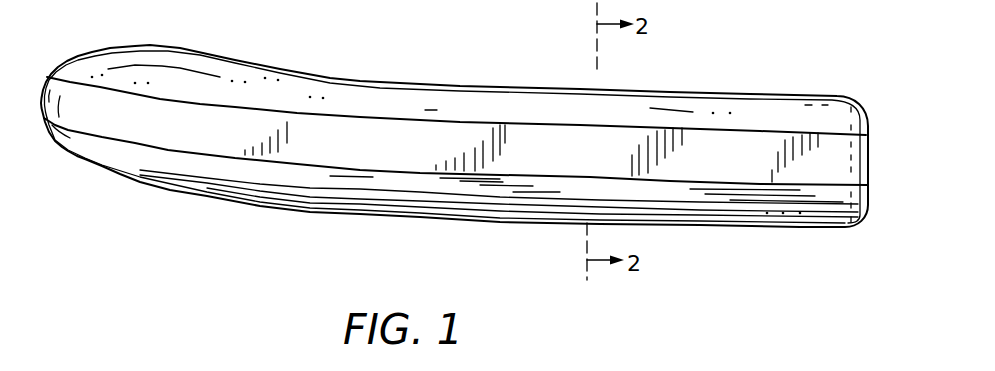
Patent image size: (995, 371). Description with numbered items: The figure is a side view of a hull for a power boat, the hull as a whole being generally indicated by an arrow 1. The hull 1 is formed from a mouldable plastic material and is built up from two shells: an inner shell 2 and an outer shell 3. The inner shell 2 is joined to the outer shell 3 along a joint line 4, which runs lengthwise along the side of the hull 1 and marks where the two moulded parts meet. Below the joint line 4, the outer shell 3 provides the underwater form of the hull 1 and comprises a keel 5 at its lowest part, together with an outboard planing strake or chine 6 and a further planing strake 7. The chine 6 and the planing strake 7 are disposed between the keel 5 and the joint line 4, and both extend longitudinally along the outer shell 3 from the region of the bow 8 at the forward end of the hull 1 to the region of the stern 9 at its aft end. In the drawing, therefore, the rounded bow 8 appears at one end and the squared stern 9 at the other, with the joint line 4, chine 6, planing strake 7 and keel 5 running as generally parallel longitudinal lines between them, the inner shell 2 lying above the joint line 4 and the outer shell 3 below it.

The hull 1 is at (509, 55).
The inner shell 2 is at (792, 92).
The outer shell 3 is at (718, 165).
The joint line 4 is at (441, 122).
The keel 5 is at (502, 220).
The outboard planing strake or chine 6 is at (340, 170).
The planing strake 7 is at (430, 197).
The bow 8 is at (82, 163).
The stern 9 is at (868, 142).